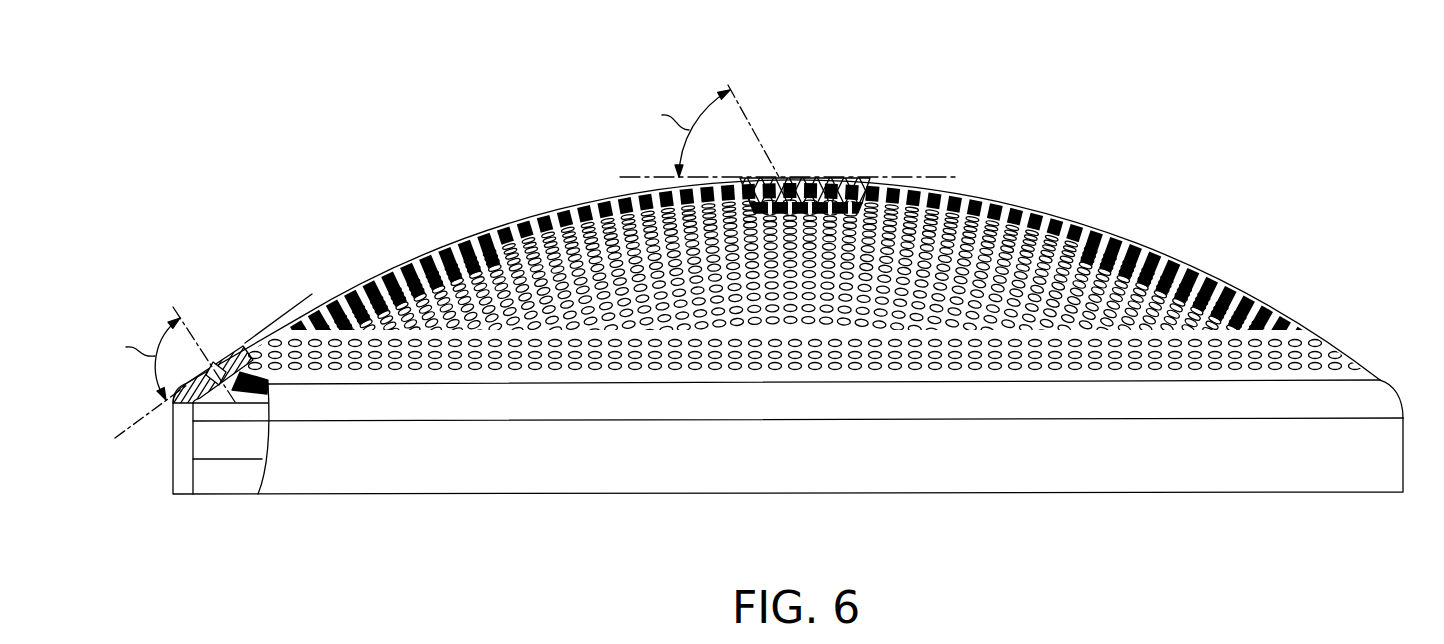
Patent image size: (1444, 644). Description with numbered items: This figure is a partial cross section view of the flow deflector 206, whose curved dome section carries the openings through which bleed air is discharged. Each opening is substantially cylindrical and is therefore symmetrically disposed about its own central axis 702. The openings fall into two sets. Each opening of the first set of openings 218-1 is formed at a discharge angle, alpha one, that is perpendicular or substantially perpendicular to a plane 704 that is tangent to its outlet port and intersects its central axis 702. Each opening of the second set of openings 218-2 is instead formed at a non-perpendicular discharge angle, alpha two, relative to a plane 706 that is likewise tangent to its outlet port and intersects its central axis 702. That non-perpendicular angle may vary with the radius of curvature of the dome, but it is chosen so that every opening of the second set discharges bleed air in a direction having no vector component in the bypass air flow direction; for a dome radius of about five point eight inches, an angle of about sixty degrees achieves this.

The lens 206 is at (523, 143).
The first set of openings 218-1 is at (1380, 362).
The second set of openings 218-2 is at (1158, 226).
The central axis 702 is at (175, 306).
The plane 704 is at (123, 434).
The plane 706 is at (912, 177).